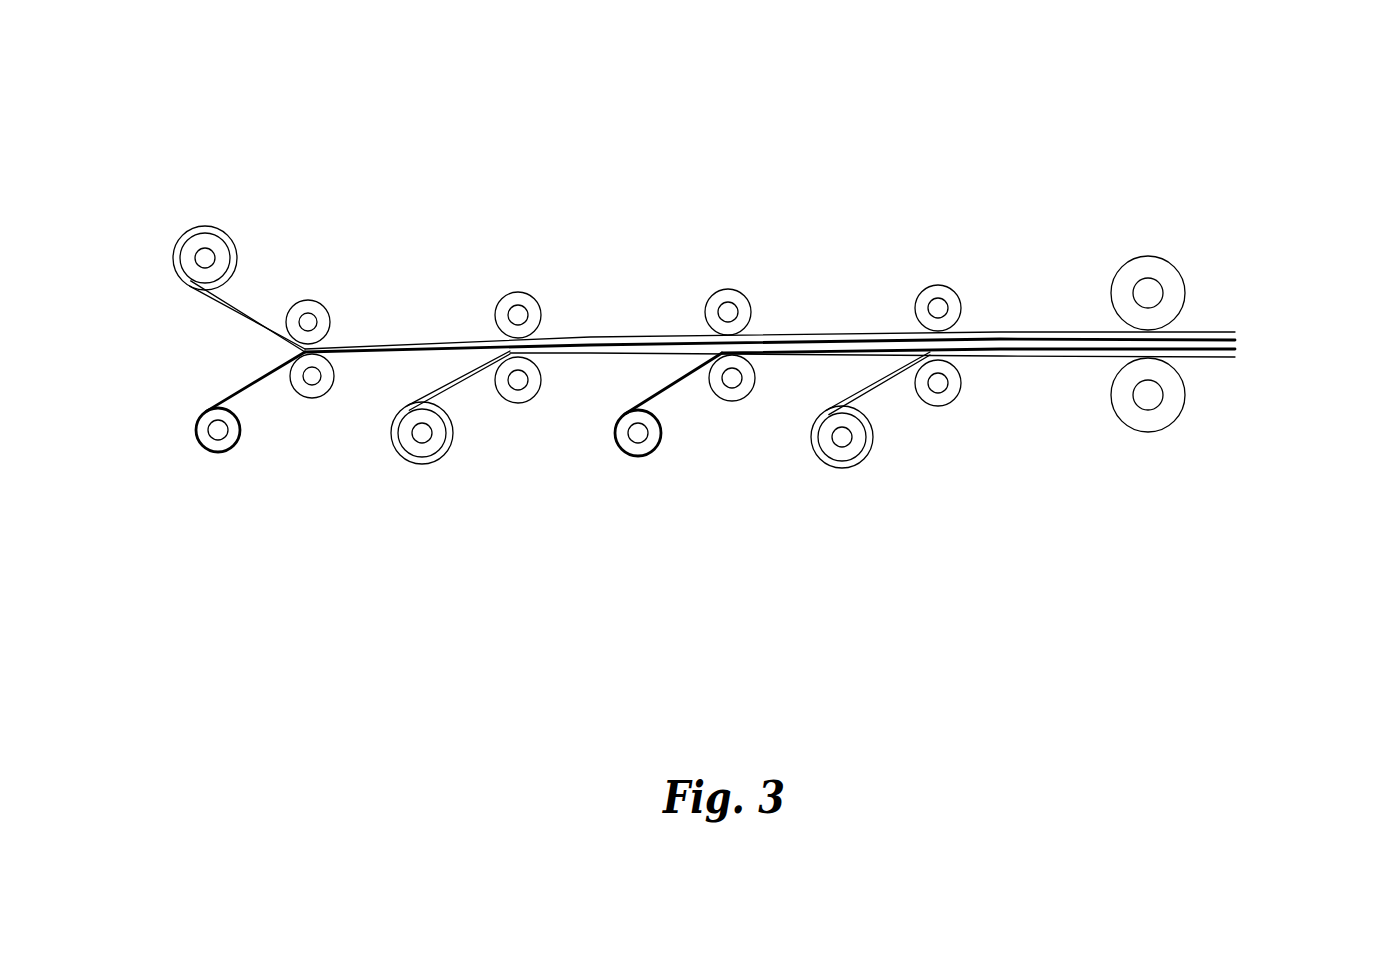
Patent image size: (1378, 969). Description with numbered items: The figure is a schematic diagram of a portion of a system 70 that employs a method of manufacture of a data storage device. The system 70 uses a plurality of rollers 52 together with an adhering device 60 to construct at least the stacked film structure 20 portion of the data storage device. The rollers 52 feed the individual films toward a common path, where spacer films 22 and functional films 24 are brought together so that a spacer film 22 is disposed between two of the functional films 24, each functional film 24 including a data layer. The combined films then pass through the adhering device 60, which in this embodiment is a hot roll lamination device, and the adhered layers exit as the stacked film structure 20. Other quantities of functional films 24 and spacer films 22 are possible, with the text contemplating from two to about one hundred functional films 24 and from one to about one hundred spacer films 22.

The stacked film structure 20 is at (1245, 372).
The spacer film 22 is at (218, 303).
The functional film 24 is at (258, 385).
The roller 52 is at (195, 242).
The adhering device 60 is at (1215, 258).
The system 70 is at (1078, 106).